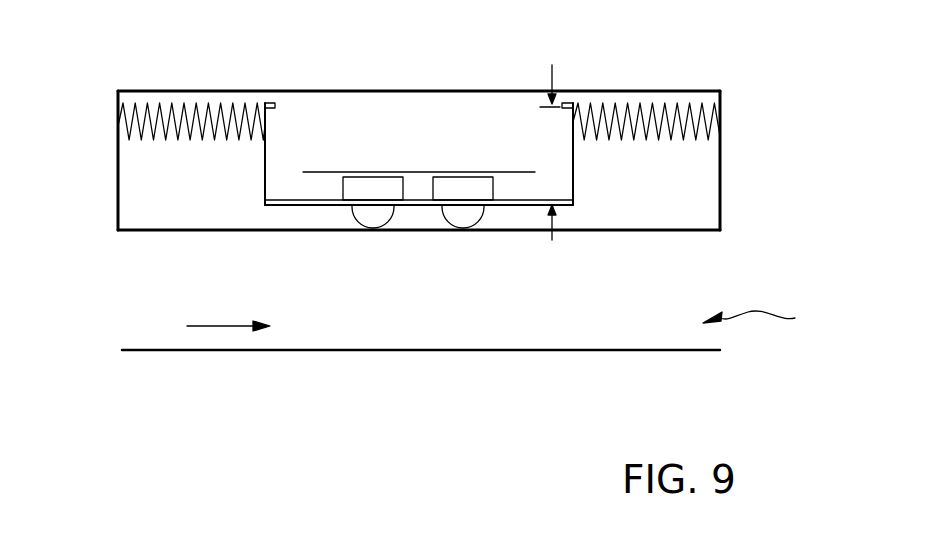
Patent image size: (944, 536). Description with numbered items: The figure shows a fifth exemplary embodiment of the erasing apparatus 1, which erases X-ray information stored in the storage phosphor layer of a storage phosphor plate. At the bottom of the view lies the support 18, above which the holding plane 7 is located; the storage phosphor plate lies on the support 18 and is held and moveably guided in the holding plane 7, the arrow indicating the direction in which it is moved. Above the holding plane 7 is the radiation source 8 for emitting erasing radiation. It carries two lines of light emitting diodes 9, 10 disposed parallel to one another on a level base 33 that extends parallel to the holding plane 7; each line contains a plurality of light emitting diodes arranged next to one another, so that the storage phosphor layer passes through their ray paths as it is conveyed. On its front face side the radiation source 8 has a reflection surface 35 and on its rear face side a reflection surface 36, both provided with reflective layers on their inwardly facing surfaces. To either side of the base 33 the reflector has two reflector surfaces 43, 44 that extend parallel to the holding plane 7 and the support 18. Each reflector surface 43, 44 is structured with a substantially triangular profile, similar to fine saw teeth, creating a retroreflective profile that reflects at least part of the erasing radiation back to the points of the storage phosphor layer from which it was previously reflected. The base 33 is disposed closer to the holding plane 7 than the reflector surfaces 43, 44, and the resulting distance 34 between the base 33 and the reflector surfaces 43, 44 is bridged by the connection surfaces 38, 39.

The erasing apparatus 1 is at (757, 318).
The holding plane 7 is at (201, 326).
The radiation source 8 is at (432, 91).
The line of light emitting diodes 9 is at (364, 190).
The line of light emitting diodes 10 is at (456, 190).
The support 18 is at (348, 351).
The base 33 is at (315, 206).
The distance 34 is at (551, 78).
The reflection surface 35 is at (117, 163).
The reflection surface 36 is at (720, 166).
The connection surface 38 is at (265, 168).
The connection surface 39 is at (573, 168).
The reflector surface 43 is at (177, 103).
The reflector surface 44 is at (642, 103).